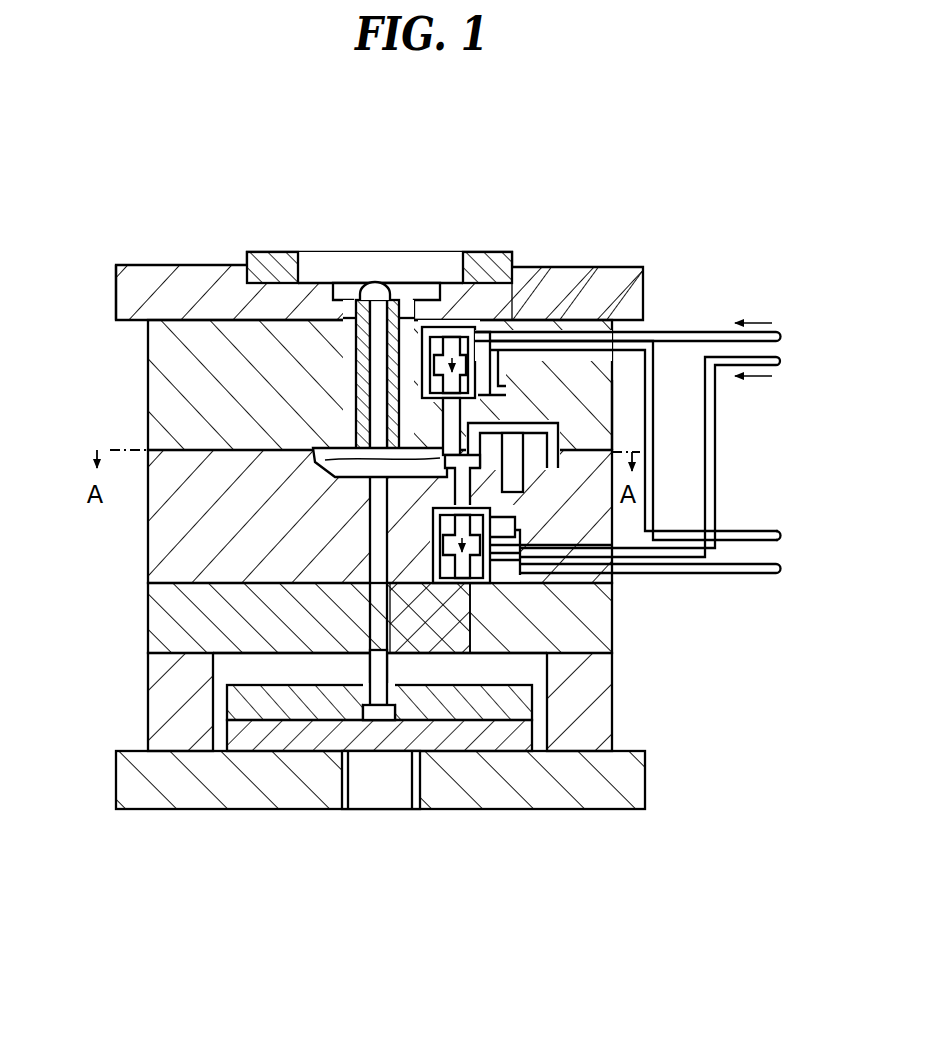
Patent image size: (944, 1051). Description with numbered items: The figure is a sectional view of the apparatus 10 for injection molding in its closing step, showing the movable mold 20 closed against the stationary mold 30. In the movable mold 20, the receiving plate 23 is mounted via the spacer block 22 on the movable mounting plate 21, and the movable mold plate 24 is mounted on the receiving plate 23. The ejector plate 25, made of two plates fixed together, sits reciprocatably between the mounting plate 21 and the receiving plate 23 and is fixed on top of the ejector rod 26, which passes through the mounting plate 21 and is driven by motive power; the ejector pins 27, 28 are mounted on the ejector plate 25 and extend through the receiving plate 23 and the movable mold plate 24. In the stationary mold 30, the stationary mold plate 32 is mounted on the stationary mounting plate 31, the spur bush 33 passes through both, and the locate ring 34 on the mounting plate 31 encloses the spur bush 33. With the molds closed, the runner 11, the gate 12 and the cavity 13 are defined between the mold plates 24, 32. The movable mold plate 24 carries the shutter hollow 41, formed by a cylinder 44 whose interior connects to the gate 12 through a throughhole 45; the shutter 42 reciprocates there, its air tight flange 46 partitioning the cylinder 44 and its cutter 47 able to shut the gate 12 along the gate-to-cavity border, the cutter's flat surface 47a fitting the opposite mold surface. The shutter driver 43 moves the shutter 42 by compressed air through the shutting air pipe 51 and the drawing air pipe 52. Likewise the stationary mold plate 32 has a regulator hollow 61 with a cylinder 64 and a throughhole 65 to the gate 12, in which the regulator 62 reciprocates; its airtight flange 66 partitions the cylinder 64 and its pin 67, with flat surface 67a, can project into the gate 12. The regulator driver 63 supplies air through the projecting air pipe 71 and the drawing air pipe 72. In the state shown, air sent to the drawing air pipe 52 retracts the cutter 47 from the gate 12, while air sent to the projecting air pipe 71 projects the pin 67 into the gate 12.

The apparatus for injection molding 10 is at (538, 140).
The runner 11 is at (335, 477).
The gate 12 is at (313, 448).
The cavity 13 is at (673, 442).
The movable mold 20 is at (363, 828).
The movable mounting plate 21 is at (565, 811).
The spacer block 22 is at (387, 696).
The receiving plate 23 is at (613, 642).
The movable mold plate 24 is at (387, 690).
The ejector plate 25 is at (227, 702).
The ejector rod 26 is at (404, 811).
The ejector pin 27 is at (613, 708).
The ejector pin 28 is at (636, 461).
The stationary mold 30 is at (344, 248).
The stationary mounting plate 31 is at (118, 295).
The stationary mold plate 32 is at (333, 241).
The spur bush 33 is at (302, 542).
The locate ring 34 is at (285, 252).
The shutter hollow 41 is at (338, 720).
The shutter 42 is at (425, 578).
The shutter driver 43 is at (685, 736).
The cylinder 44 is at (613, 615).
The throughhole 45 is at (441, 513).
The air tight flange 46 is at (395, 590).
The cutter 47 is at (522, 518).
The flat surface 47a is at (523, 446).
The shutting air pipe 51 is at (782, 569).
The drawing air pipe 52 is at (782, 361).
The regulator hollow 61 is at (320, 297).
The regulator 62 is at (495, 281).
The regulator driver 63 is at (668, 225).
The cylinder 64 is at (470, 326).
The throughhole 65 is at (368, 440).
The airtight flange 66 is at (497, 334).
The pin 67 is at (590, 398).
The flat surface 67a is at (441, 480).
The projecting air pipe 71 is at (782, 336).
The drawing air pipe 72 is at (782, 537).